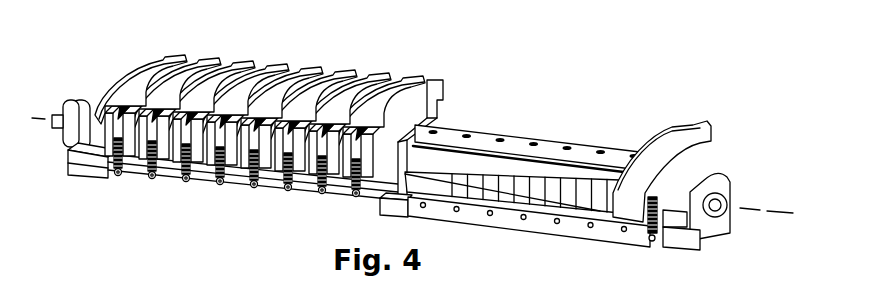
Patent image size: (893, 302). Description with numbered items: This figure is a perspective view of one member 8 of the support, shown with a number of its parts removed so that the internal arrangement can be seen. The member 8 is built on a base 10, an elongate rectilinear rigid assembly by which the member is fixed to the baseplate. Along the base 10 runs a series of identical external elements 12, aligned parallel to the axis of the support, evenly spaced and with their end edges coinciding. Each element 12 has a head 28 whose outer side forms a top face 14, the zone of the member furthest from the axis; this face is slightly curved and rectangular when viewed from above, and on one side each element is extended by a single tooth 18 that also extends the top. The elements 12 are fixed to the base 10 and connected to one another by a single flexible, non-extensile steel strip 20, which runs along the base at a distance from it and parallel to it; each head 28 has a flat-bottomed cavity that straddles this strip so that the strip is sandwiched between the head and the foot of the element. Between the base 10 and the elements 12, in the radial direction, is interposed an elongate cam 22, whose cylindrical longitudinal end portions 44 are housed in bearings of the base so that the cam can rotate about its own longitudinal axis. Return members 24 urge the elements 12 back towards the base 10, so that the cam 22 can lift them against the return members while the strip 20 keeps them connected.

The member 8 is at (612, 118).
The base 10 is at (577, 226).
The external element 12 is at (158, 79).
The top face 14 is at (268, 79).
The tooth 18 is at (128, 148).
The strip 20 is at (521, 140).
The cam 22 is at (458, 182).
The return member 24 is at (245, 187).
The head 28 is at (413, 95).
The cylindrical longitudinal end portion 44 is at (680, 203).